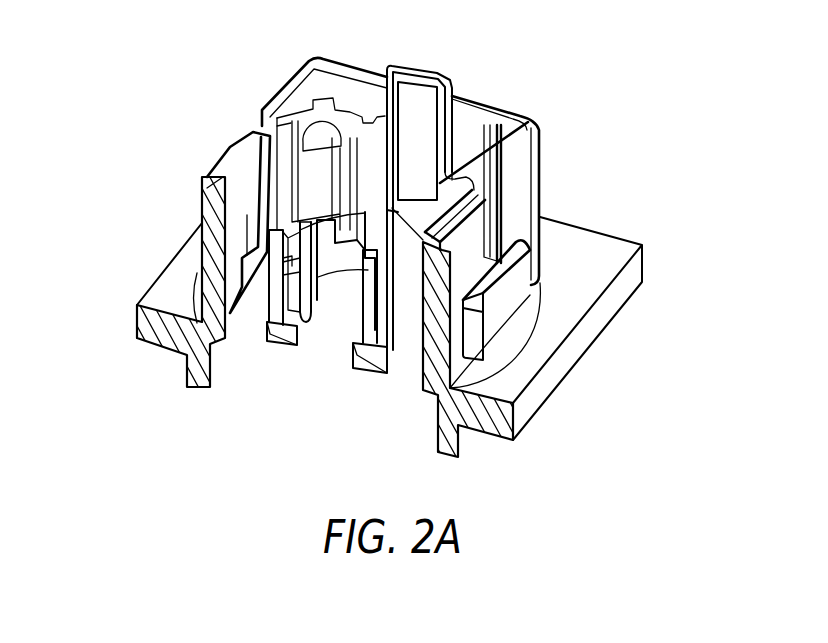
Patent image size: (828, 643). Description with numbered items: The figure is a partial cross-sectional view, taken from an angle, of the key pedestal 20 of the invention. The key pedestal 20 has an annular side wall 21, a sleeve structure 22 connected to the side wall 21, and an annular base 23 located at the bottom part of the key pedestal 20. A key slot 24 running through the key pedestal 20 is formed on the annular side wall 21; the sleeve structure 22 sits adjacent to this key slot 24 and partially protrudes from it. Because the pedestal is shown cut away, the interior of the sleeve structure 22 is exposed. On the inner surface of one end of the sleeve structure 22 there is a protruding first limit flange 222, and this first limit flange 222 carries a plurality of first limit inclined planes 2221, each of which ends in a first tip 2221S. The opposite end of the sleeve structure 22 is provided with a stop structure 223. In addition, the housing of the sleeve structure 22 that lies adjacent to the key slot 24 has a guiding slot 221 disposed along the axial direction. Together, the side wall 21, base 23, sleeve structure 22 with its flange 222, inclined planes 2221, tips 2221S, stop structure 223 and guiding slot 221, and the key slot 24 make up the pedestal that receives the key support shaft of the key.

The key pedestal 20 is at (137, 30).
The annular side wall 21 is at (525, 170).
The sleeve structure 22 is at (308, 114).
The guiding slot 221 is at (340, 157).
The first limit flange 222 is at (312, 191).
The first limit inclined planes 2221 is at (290, 290).
The first tip 2221S is at (330, 243).
The stop structure 223 is at (355, 347).
The annular base 23 is at (472, 442).
The key slot 24 is at (464, 128).